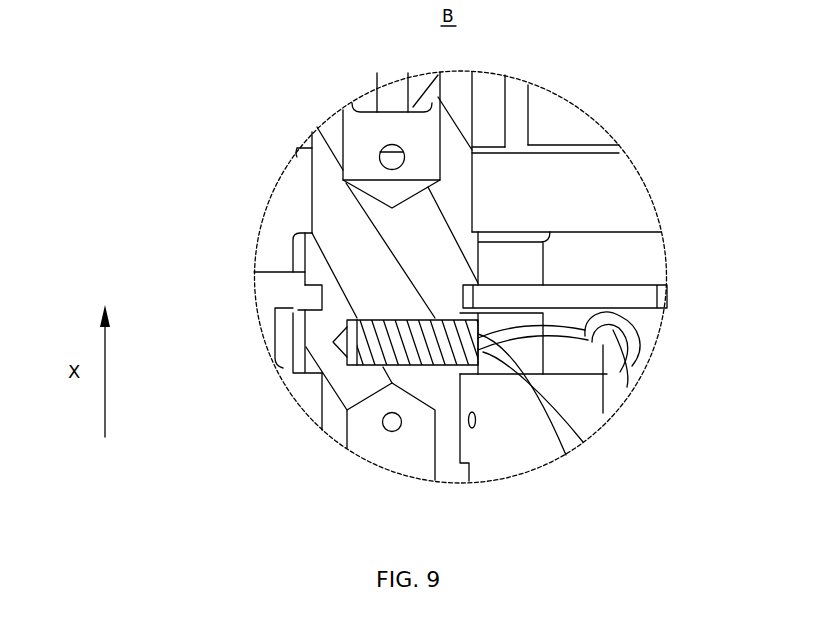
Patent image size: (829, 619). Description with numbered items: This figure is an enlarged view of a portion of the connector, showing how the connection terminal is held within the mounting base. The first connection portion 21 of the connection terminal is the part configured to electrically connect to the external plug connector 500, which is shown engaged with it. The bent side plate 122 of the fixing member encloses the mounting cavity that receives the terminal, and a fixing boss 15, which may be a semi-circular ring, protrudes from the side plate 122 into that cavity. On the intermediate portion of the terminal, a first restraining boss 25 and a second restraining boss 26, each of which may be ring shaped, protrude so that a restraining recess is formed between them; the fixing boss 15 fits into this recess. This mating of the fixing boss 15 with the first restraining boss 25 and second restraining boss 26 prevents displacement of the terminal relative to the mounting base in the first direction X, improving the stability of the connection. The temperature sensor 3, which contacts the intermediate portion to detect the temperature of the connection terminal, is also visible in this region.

The external plug connector 500 is at (428, 153).
The first connection portion 21 is at (450, 177).
The temperature sensor 3 is at (587, 330).
The first restraining boss 25 is at (300, 233).
The fixing boss 15 is at (311, 295).
The second restraining boss 26 is at (305, 354).
The side plate 122 is at (302, 398).